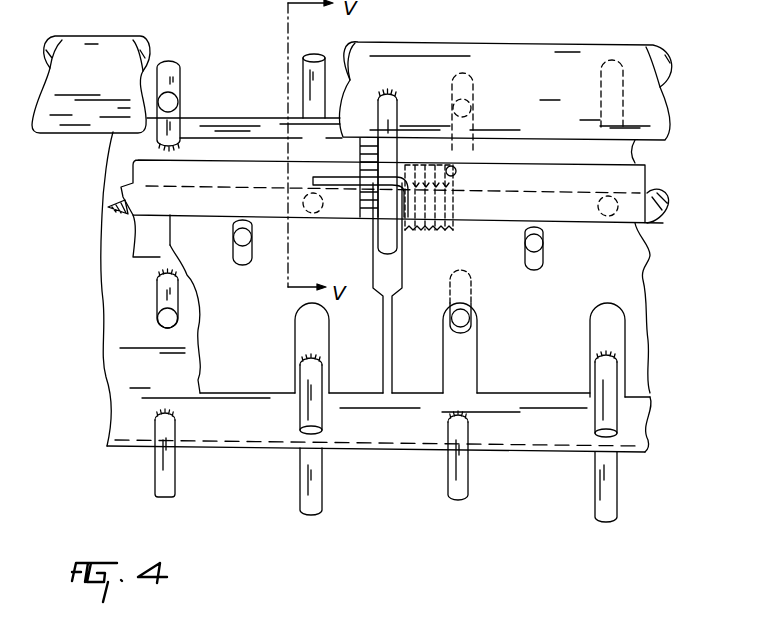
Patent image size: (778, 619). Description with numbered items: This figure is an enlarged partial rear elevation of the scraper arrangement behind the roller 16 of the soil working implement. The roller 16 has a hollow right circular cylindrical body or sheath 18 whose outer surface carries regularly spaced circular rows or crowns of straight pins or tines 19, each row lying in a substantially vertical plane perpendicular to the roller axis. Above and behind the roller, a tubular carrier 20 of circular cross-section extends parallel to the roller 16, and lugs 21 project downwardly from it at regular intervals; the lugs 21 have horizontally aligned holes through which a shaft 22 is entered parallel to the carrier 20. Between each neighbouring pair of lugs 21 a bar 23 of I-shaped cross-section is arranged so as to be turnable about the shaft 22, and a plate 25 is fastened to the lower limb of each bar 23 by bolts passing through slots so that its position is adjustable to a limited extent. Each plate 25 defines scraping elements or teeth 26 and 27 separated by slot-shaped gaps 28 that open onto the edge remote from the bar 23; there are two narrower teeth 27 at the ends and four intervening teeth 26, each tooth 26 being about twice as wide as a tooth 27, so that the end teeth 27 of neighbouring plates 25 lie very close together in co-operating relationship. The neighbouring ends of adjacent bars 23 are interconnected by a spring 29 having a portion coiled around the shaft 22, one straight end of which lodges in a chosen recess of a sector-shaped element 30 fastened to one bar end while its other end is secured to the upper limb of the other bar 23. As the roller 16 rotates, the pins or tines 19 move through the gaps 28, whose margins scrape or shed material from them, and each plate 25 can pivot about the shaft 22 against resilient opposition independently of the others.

The roller 16 is at (266, 451).
The roller body or sheath 18 is at (106, 378).
The pins or tines 19 is at (178, 100).
The tubular carrier 20 is at (112, 46).
The lugs 21 is at (388, 110).
The shaft 22 is at (103, 215).
The bar 23 is at (103, 168).
The plate 25 is at (170, 246).
The scraping elements or teeth 26 is at (210, 332).
The scraping elements or teeth 27 is at (410, 392).
The slot-shaped gaps 28 is at (297, 320).
The spring 29 is at (402, 180).
The sector-shaped element 30 is at (360, 148).